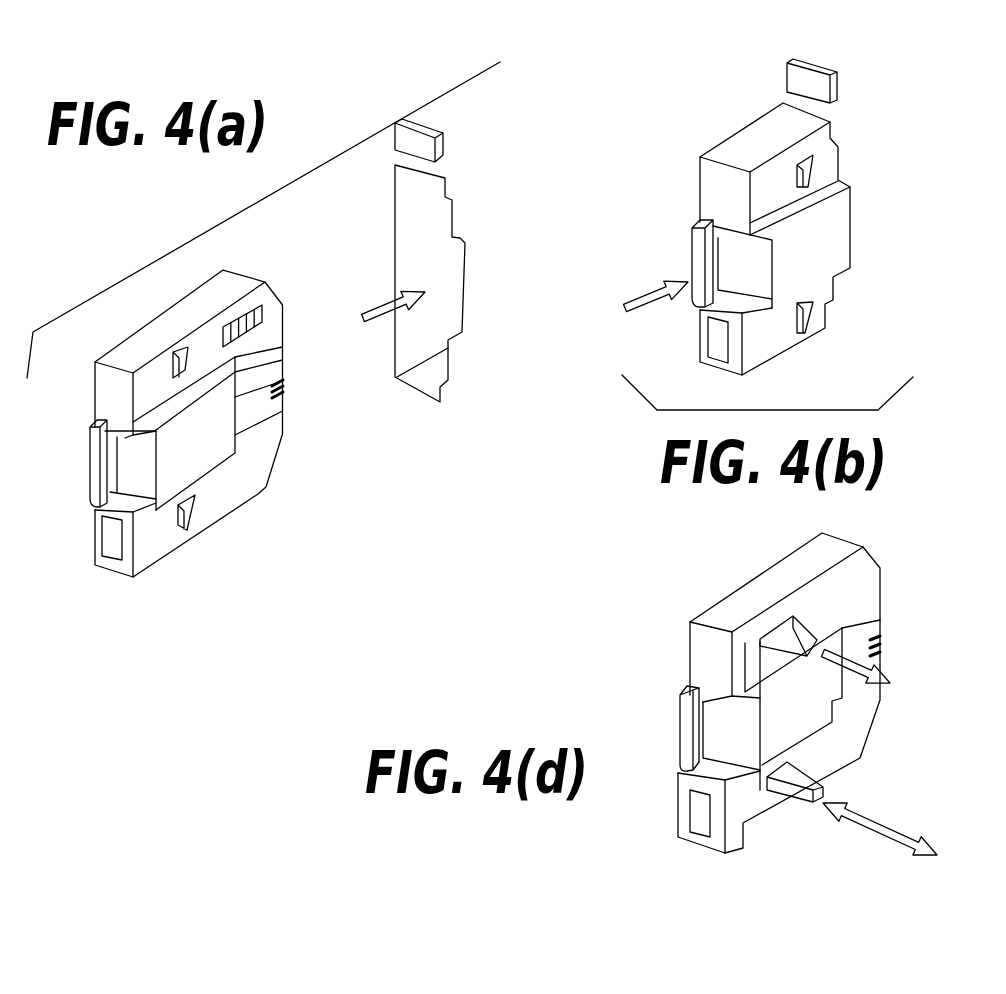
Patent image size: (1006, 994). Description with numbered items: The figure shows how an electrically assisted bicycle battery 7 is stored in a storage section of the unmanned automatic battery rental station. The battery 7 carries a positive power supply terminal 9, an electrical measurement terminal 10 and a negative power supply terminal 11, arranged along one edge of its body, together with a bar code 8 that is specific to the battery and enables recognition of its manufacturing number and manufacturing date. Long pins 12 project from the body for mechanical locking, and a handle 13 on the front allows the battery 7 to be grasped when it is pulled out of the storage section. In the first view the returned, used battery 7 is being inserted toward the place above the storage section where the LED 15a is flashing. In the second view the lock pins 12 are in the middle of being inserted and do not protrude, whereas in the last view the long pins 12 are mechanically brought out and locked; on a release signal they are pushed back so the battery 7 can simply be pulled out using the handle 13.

In FIG. 4A, the electrically assisted bicycle battery 7 is at (237, 492).
In FIG. 4B, the electrically assisted bicycle battery 7 is at (747, 140).
In FIG. 4D, the electrically assisted bicycle battery 7 is at (767, 582).
In FIG. 4A, the bar code 8 is at (264, 312).
In FIG. 4A, the positive power supply terminal 9 is at (287, 390).
In FIG. 4A, the electrical measurement terminal 10 is at (286, 378).
In FIG. 4A, the negative power supply terminal 11 is at (284, 357).
In FIG. 4A, the long pins 12 is at (177, 530).
In FIG. 4B, the long pins 12 is at (810, 322).
In FIG. 4D, the long pins 12 is at (805, 797).
In FIG. 4A, the handle 13 is at (88, 477).
In FIG. 4B, the handle 13 is at (693, 298).
In FIG. 4D, the handle 13 is at (680, 745).
In FIG. 4A, the LED 15a is at (428, 122).
In FIG. 4B, the LED 15a is at (835, 83).